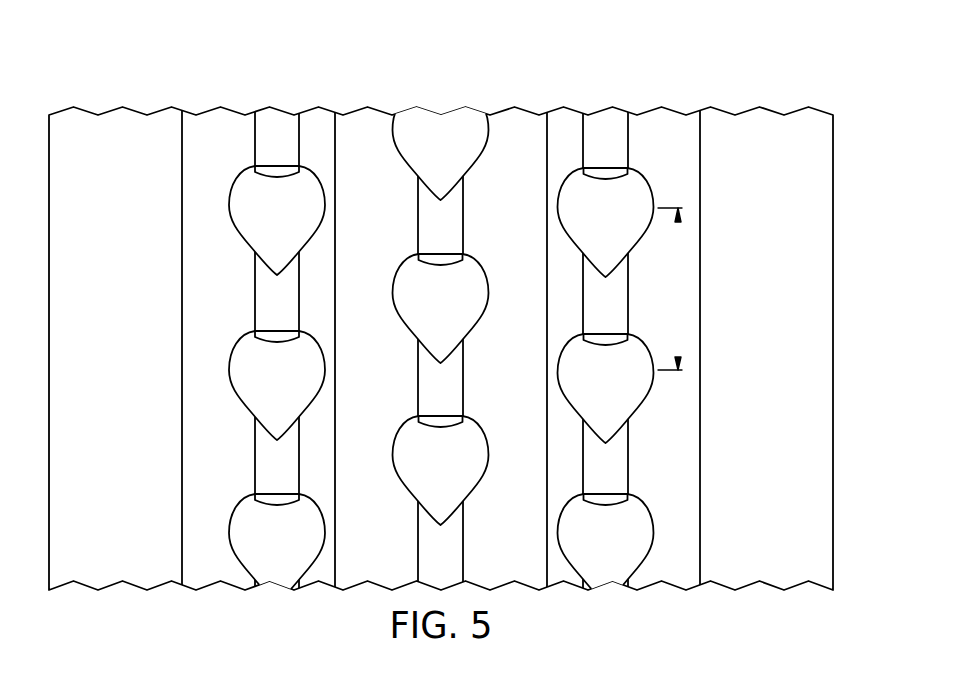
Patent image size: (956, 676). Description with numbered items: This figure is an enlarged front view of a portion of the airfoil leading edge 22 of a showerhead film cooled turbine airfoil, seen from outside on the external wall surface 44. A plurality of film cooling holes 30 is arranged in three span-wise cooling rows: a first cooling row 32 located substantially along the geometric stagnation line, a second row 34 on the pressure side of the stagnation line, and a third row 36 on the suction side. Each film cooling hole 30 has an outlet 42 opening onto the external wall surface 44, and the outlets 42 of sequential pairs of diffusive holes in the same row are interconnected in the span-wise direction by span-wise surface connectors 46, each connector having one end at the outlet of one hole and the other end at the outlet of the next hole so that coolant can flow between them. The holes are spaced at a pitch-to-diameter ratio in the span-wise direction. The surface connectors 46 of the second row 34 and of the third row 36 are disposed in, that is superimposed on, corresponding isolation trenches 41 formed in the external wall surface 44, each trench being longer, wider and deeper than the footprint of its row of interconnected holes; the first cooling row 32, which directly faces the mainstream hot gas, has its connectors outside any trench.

The leading edge 22 is at (730, 83).
The film cooling hole 30 is at (640, 190).
The first cooling row 32 is at (450, 100).
The second row 34 is at (615, 100).
The third row 36 is at (282, 100).
The isolation trench 41 is at (192, 217).
The outlet 42 is at (230, 533).
The external wall surface 44 is at (792, 575).
The span-wise surface connector 46 is at (254, 142).